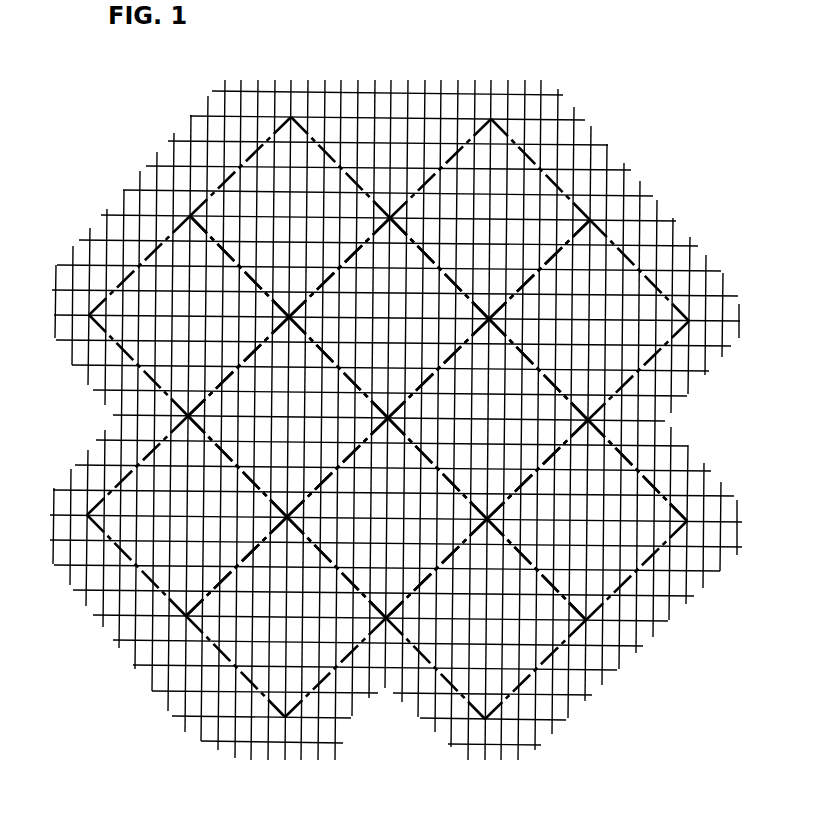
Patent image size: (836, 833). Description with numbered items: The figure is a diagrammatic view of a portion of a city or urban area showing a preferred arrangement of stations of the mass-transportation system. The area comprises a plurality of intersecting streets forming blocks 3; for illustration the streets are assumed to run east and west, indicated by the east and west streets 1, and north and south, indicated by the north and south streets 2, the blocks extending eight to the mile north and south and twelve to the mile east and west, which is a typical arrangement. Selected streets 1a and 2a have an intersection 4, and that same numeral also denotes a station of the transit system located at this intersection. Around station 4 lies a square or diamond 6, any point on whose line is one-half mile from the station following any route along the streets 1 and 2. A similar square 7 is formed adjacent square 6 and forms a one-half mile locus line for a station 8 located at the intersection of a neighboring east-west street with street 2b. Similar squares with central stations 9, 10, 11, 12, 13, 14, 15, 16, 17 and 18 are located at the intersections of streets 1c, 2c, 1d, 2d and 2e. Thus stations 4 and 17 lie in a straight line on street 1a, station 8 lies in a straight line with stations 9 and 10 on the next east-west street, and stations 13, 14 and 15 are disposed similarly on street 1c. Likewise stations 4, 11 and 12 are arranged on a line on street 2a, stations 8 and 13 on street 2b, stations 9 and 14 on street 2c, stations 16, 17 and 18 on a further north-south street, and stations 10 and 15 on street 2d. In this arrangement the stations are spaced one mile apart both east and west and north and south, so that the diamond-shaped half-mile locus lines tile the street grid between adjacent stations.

The east and west streets 1 is at (580, 93).
The selected street 1a is at (113, 417).
The street 1c is at (727, 527).
The street 1d is at (697, 219).
The north and south streets 2 is at (457, 81).
The selected street 2a is at (490, 81).
The street 2b is at (592, 128).
The street 2c is at (373, 135).
The street 2d is at (191, 120).
The street 2e is at (301, 81).
The blocks 3 is at (630, 207).
The intersection / station 4 is at (478, 418).
The square or diamond 6 is at (590, 418).
The square 7 is at (643, 311).
The station 8 is at (578, 318).
The station 9 is at (378, 318).
The station 10 is at (178, 318).
The station 11 is at (478, 218).
The station 12 is at (478, 618).
The station 13 is at (578, 518).
The station 14 is at (378, 518).
The station 15 is at (178, 518).
The station 16 is at (278, 218).
The station 17 is at (278, 418).
The station 18 is at (278, 618).